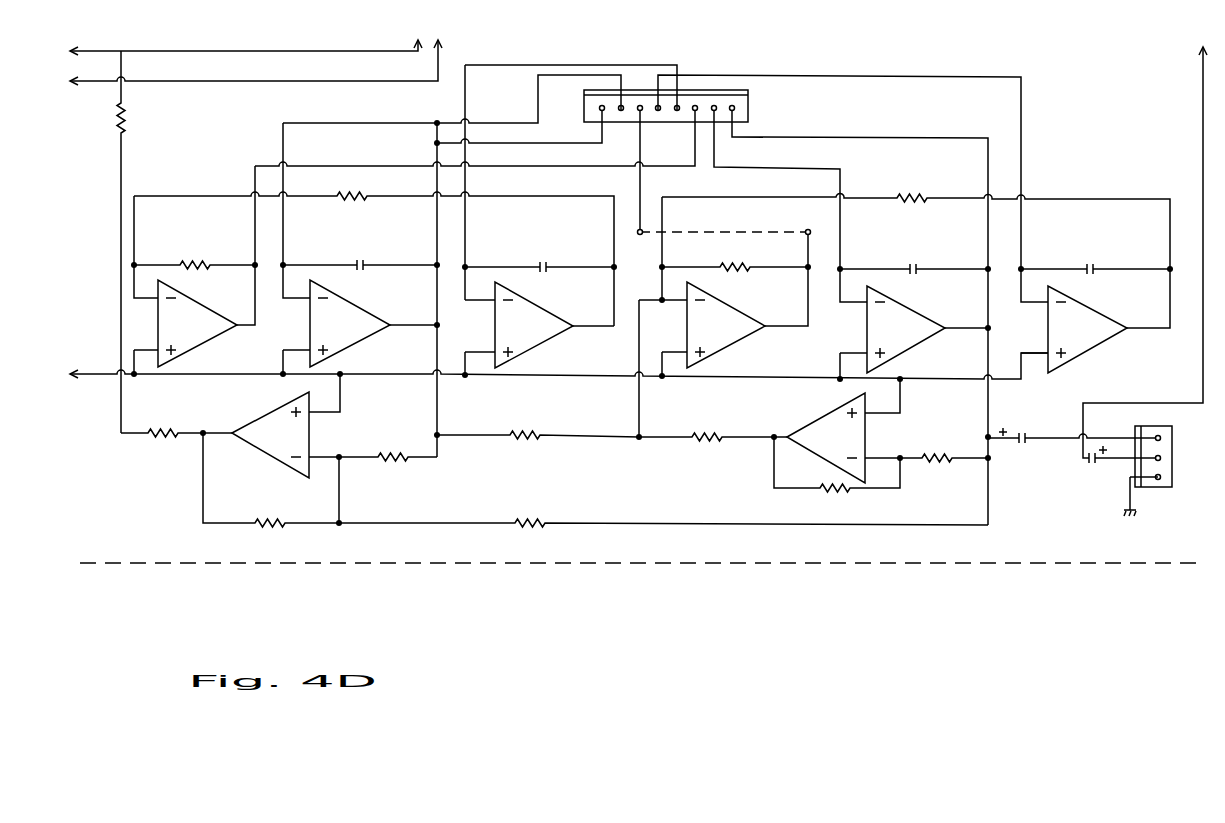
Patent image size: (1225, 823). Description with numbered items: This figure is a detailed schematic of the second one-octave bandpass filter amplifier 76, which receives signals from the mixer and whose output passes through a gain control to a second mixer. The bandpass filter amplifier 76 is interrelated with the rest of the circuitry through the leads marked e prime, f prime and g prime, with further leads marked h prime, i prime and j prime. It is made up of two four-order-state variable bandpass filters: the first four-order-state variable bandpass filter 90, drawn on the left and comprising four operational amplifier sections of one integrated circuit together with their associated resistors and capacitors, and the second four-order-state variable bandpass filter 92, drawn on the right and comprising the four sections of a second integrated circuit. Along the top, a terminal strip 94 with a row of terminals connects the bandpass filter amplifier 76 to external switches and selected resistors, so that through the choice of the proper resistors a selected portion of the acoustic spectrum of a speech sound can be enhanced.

The bandpass filter amplifier 76 is at (698, 567).
The four-order-state variable bandpass filter 90 is at (625, 562).
The four-order-state variable bandpass filter 92 is at (1125, 562).
The terminal strip 94 is at (748, 112).